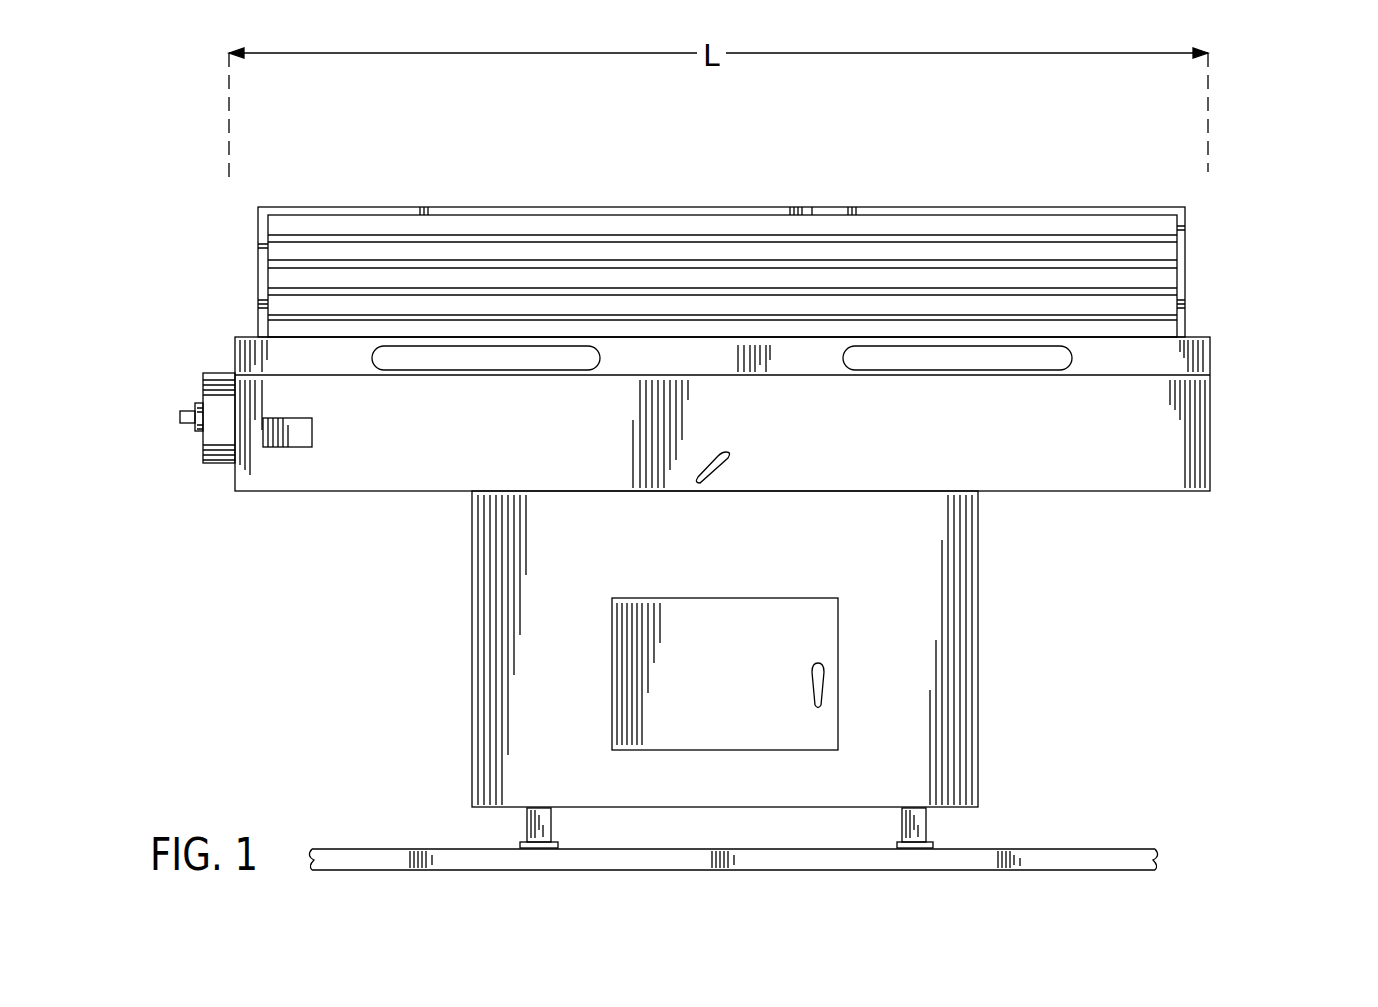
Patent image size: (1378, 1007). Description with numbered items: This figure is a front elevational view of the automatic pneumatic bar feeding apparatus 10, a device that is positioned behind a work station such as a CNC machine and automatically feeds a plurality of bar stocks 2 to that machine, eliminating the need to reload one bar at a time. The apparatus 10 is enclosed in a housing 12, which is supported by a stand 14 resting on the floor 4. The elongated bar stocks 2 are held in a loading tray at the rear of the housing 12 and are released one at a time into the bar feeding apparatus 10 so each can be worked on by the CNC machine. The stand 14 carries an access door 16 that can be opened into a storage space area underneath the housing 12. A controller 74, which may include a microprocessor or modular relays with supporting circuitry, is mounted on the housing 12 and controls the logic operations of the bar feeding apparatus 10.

The automatic pneumatic bar feeding apparatus 10 is at (1258, 104).
The bar stock 2 is at (1140, 243).
The floor 4 is at (1130, 195).
The housing 12 is at (1213, 427).
The stand 14 is at (980, 694).
The access door 16 is at (828, 618).
The controller 74 is at (292, 445).